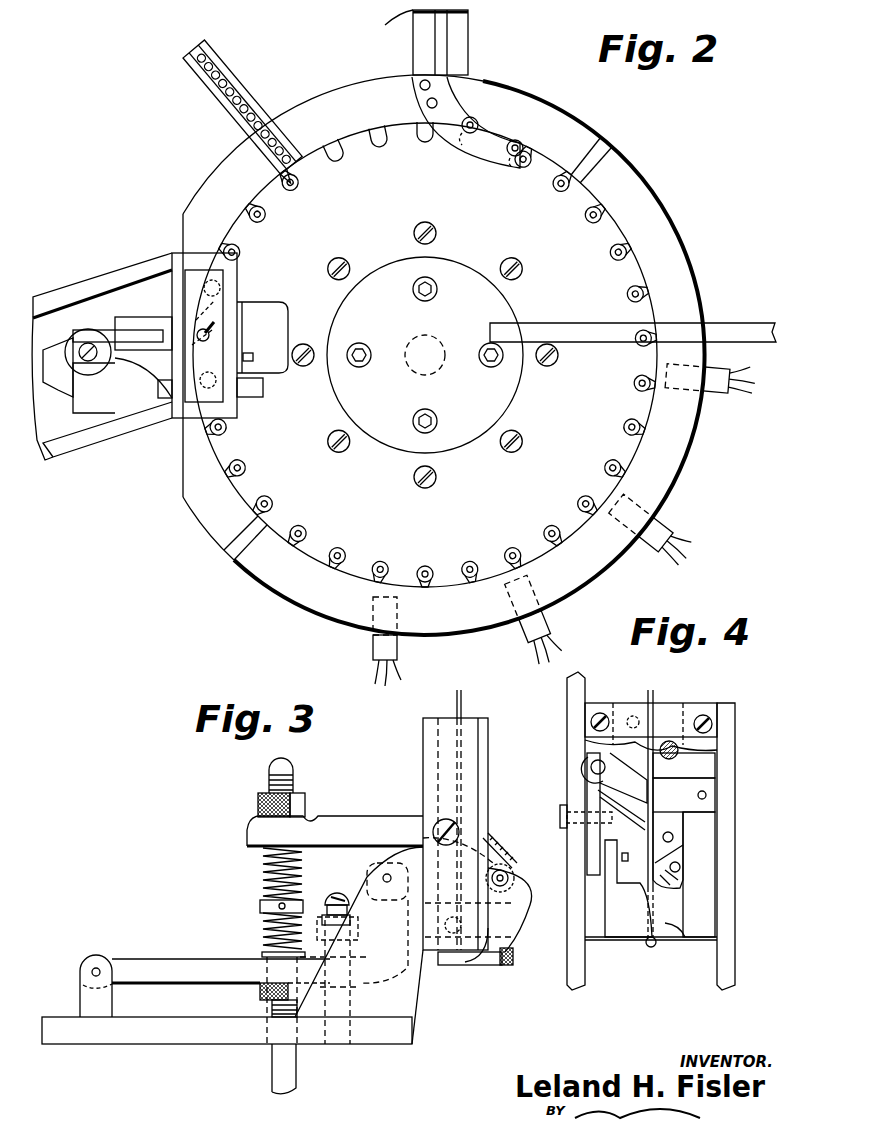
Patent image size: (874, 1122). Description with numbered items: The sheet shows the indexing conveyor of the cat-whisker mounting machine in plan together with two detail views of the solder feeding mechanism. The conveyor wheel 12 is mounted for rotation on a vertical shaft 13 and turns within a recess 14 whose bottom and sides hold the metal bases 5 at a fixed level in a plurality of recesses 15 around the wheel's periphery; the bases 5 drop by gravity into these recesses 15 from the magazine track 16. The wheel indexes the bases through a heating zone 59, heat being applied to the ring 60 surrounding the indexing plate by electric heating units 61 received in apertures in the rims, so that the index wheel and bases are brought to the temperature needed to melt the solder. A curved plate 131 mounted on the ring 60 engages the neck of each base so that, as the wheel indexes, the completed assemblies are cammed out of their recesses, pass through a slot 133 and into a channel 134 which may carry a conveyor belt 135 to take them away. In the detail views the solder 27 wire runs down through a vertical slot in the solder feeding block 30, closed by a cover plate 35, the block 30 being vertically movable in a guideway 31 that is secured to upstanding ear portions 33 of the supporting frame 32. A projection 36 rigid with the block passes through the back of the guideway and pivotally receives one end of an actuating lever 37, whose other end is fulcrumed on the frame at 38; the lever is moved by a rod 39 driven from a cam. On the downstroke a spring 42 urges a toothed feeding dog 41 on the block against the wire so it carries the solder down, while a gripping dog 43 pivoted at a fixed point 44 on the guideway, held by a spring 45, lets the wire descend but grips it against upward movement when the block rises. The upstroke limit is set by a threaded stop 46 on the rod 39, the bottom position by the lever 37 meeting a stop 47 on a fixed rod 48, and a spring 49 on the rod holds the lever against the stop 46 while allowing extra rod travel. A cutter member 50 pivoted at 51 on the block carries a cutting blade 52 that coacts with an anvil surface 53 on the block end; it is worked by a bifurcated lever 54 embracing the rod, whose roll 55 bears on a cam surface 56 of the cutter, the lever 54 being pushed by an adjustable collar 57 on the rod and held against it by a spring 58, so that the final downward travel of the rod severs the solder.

In FIG. 2, the base 5 is at (247, 100).
In FIG. 2, the conveyor wheel 12 is at (590, 232).
In FIG. 2, the vertical shaft 13 is at (440, 335).
In FIG. 2, the recess 14 is at (650, 395).
In FIG. 2, the recesses 15 is at (380, 135).
In FIG. 2, the magazine track 16 is at (233, 95).
In FIG. 3, the solder 27 is at (462, 703).
In FIG. 4, the solder 27 is at (655, 770).
In FIG. 2, the solder feeding block 30 is at (190, 312).
In FIG. 4, the solder feeding block 30 is at (630, 705).
In FIG. 2, the guideway 31 is at (197, 277).
In FIG. 4, the guideway 31 is at (708, 827).
In FIG. 3, the supporting frame 32 is at (150, 1047).
In FIG. 2, the ear portions 33 is at (180, 412).
In FIG. 3, the ear portions 33 is at (408, 988).
In FIG. 4, the ear portions 33 is at (730, 955).
In FIG. 2, the cover plate 35 is at (215, 310).
In FIG. 4, the cover plate 35 is at (725, 748).
In FIG. 2, the projection 36 is at (135, 273).
In FIG. 3, the projection 36 is at (375, 863).
In FIG. 4, the projection 36 is at (576, 831).
In FIG. 2, the actuating lever 37 is at (70, 348).
In FIG. 3, the actuating lever 37 is at (215, 965).
In FIG. 3, the fulcrum 38 is at (98, 968).
In FIG. 3, the rod 39 is at (297, 1075).
In FIG. 4, the feeding dog 41 is at (682, 868).
In FIG. 4, the spring 42 is at (672, 880).
In FIG. 4, the gripping dog 43 is at (585, 780).
In FIG. 4, the fixed point 44 is at (583, 760).
In FIG. 4, the spring 45 is at (575, 797).
In FIG. 3, the stop 46 is at (259, 990).
In FIG. 3, the stop 47 is at (410, 1012).
In FIG. 3, the fixed rod 48 is at (325, 905).
In FIG. 3, the spring 49 is at (260, 920).
In FIG. 3, the cutter member 50 is at (528, 905).
In FIG. 4, the cutter member 50 is at (640, 925).
In FIG. 3, the pivot 51 is at (515, 938).
In FIG. 3, the cutting blade 52 is at (490, 967).
In FIG. 3, the anvil surface 53 is at (457, 967).
In FIG. 2, the lever 54 is at (120, 400).
In FIG. 3, the lever 54 is at (340, 815).
In FIG. 4, the lever 54 is at (605, 885).
In FIG. 3, the roll 55 is at (514, 845).
In FIG. 3, the cam surface 56 is at (514, 875).
In FIG. 3, the adjustable collar 57 is at (296, 800).
In FIG. 3, the spring 58 is at (263, 862).
In FIG. 2, the heating zone 59 is at (430, 612).
In FIG. 2, the ring 60 is at (215, 517).
In FIG. 2, the electric heating units 61 is at (388, 655).
In FIG. 2, the curved plate 131 is at (490, 155).
In FIG. 2, the slot 133 is at (445, 90).
In FIG. 2, the channel 134 is at (455, 30).
In FIG. 2, the conveyor belt 135 is at (386, 25).